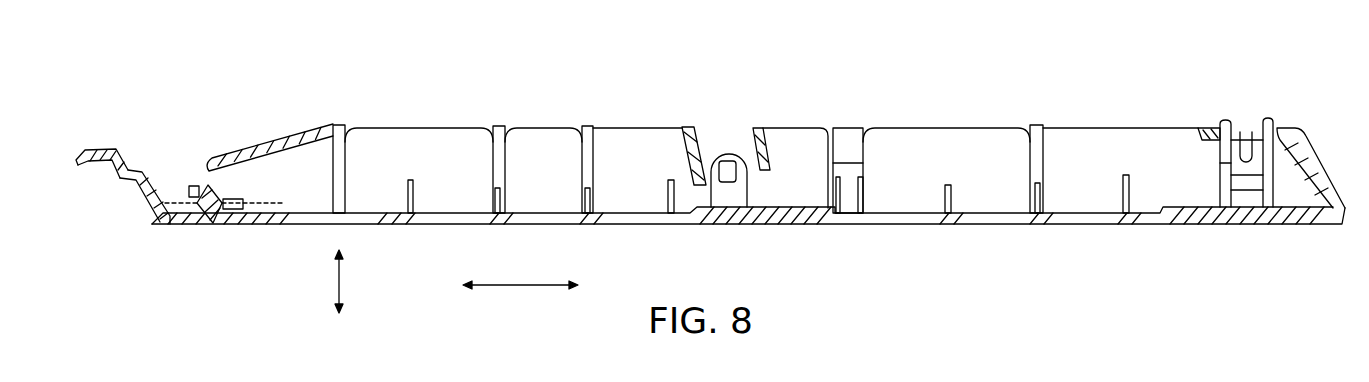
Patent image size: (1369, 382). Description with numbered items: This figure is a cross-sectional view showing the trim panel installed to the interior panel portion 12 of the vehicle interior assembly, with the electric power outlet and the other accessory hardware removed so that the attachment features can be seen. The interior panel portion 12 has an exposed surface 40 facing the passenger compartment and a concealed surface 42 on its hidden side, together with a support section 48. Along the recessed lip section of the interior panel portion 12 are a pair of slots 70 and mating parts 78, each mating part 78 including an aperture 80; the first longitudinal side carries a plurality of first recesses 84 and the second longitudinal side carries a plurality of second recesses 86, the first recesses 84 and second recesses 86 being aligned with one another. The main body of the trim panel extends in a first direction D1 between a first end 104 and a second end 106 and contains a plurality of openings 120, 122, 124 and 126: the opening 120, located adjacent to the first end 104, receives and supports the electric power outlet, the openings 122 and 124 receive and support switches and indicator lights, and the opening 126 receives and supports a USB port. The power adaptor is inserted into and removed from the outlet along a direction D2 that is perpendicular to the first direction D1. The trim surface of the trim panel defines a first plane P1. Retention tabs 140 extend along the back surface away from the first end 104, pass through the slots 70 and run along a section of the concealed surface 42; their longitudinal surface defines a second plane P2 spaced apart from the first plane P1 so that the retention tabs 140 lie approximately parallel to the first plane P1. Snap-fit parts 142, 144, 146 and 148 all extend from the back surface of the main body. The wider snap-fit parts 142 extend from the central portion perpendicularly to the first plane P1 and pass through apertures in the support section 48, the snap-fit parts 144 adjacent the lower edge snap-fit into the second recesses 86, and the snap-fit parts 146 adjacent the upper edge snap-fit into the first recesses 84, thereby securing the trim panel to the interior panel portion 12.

The interior panel portion 12 is at (688, 226).
The exposed surface 40 is at (161, 226).
The concealed surface 42 is at (101, 150).
The support section 48 is at (752, 168).
The slots 70 is at (199, 184).
The mating parts 78 is at (710, 186).
The aperture 80 is at (1227, 132).
The first recesses 84 is at (769, 111).
The second recesses 86 is at (580, 128).
The first end 104 is at (213, 224).
The second end 106 is at (1313, 208).
The opening 120 is at (318, 226).
The opening 122 is at (613, 222).
The opening 124 is at (1080, 216).
The opening 126 is at (1193, 214).
The retention tabs 140 is at (189, 190).
The snap-fit parts 142 is at (731, 156).
The snap-fit parts 144 is at (688, 142).
The snap-fit parts 146 is at (596, 160).
The snap-fit parts 148 is at (1245, 132).
The first plane P1 is at (775, 226).
The second plane P2 is at (230, 198).
The first direction D1 is at (517, 289).
The direction D2 is at (343, 280).